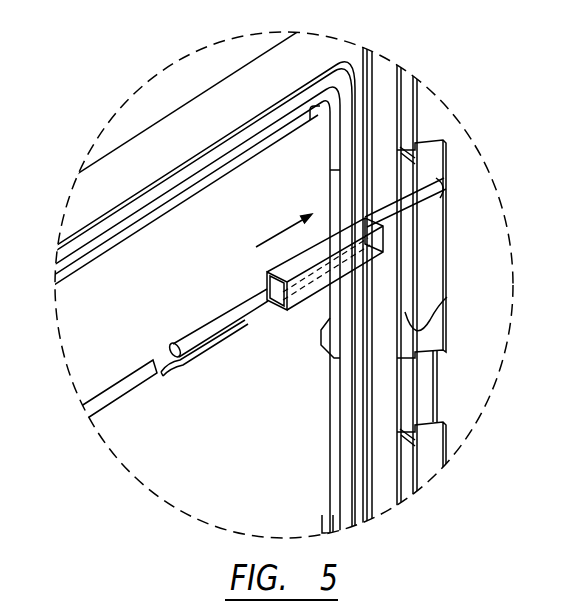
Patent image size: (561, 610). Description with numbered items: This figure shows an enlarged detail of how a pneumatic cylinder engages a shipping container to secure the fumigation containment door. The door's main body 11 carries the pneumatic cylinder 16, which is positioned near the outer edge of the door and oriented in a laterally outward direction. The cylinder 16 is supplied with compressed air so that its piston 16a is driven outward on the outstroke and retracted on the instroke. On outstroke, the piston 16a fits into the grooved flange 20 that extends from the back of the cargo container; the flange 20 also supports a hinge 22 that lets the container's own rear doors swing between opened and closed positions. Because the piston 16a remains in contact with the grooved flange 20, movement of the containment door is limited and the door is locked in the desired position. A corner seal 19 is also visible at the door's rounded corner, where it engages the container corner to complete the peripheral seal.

The main body 11 is at (120, 327).
The pneumatic cylinder 16 is at (218, 318).
The piston 16a is at (387, 202).
The corner seal 19 is at (373, 78).
The grooved flange 20 is at (442, 303).
The hinge 22 is at (437, 388).